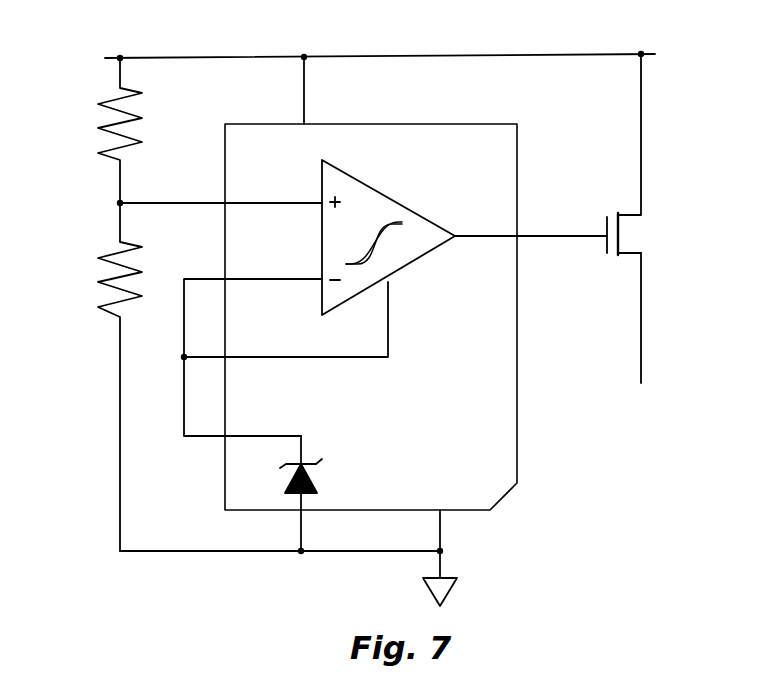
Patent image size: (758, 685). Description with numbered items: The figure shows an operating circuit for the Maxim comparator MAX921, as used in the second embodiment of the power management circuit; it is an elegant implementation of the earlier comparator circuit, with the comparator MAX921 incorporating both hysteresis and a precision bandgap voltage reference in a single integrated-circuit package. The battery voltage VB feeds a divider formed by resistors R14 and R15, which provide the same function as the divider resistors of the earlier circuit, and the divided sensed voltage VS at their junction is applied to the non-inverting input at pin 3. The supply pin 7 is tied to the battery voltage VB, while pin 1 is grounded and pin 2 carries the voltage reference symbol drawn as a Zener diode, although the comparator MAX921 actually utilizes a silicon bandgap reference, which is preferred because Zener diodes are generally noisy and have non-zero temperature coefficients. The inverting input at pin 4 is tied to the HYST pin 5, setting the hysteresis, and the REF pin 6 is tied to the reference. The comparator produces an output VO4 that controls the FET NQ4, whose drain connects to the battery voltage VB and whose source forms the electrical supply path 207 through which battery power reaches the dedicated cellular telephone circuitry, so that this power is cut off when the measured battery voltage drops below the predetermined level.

The electrical supply path 207 is at (643, 318).
The resistor R14 is at (95, 130).
The resistor R15 is at (95, 377).
The FET NQ4 is at (647, 154).
The Maxim 921 comparator MAX921 is at (371, 317).
The battery voltage VB is at (399, 55).
The sensed voltage VS is at (219, 190).
The comparator output VO4 is at (531, 222).
The hysteresis pin HYST is at (235, 371).
The reference pin REF is at (277, 493).
The pin 1 is at (442, 558).
The pin 2 is at (280, 537).
The pin 3 is at (263, 217).
The pin 4 is at (253, 318).
The pin 5 is at (284, 334).
The pin 6 is at (242, 410).
The pin 7 is at (291, 90).